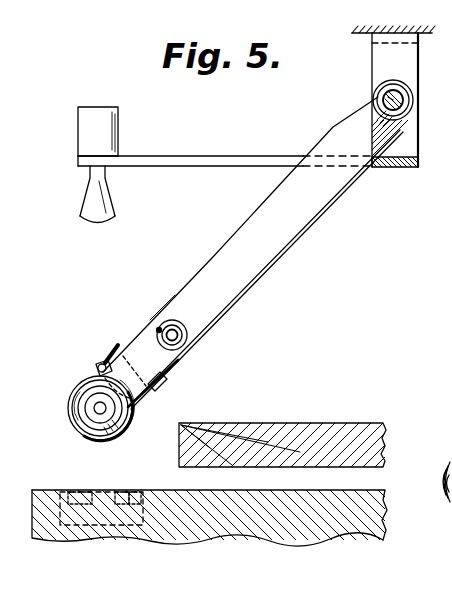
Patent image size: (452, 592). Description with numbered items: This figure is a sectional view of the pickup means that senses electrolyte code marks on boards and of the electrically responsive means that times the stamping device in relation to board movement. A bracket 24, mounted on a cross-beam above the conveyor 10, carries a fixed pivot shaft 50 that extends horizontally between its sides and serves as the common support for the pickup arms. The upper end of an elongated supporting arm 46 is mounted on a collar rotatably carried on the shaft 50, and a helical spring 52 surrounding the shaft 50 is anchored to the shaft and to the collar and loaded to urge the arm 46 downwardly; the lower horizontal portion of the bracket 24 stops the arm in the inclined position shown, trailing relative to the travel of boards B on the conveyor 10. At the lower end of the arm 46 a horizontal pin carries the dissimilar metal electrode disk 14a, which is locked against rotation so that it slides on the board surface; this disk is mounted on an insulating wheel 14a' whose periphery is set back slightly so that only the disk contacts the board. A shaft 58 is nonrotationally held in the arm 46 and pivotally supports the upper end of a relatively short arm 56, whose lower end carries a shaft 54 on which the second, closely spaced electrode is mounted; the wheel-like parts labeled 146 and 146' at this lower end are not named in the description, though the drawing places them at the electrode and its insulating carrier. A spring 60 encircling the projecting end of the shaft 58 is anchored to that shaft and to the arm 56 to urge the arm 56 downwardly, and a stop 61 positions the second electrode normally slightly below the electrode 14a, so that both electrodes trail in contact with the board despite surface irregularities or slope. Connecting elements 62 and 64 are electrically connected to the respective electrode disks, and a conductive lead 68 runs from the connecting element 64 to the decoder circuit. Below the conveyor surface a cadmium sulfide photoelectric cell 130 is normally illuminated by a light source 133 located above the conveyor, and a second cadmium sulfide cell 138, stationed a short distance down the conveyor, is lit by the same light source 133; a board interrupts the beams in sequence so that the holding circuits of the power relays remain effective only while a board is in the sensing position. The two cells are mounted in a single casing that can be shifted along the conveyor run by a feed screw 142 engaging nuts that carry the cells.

The bracket 24 is at (418, 68).
The fixed pivot shaft 50 is at (403, 100).
The helical spring 52 is at (384, 96).
The light source 133 is at (90, 219).
The supporting arm 46 is at (272, 248).
The shaft 58 is at (190, 335).
The spring 60 is at (157, 331).
The short arm 56 is at (158, 362).
The stop 61 is at (156, 388).
The connecting element 64 is at (97, 367).
The conductive lead 68 is at (115, 349).
The shaft 54 is at (94, 408).
The tire 146 is at (143, 420).
The hub 146' is at (54, 421).
The board B is at (268, 423).
The conveyor 10 is at (300, 541).
The cadmium sulfide photoelectric cell 130 is at (118, 491).
The second cadmium sulfide cell 138 is at (78, 491).
The feed screw 142 is at (138, 491).
The connecting element 62 is at (446, 505).
The insulating wheel 14a' is at (436, 511).
The electrode disk 14a is at (441, 519).